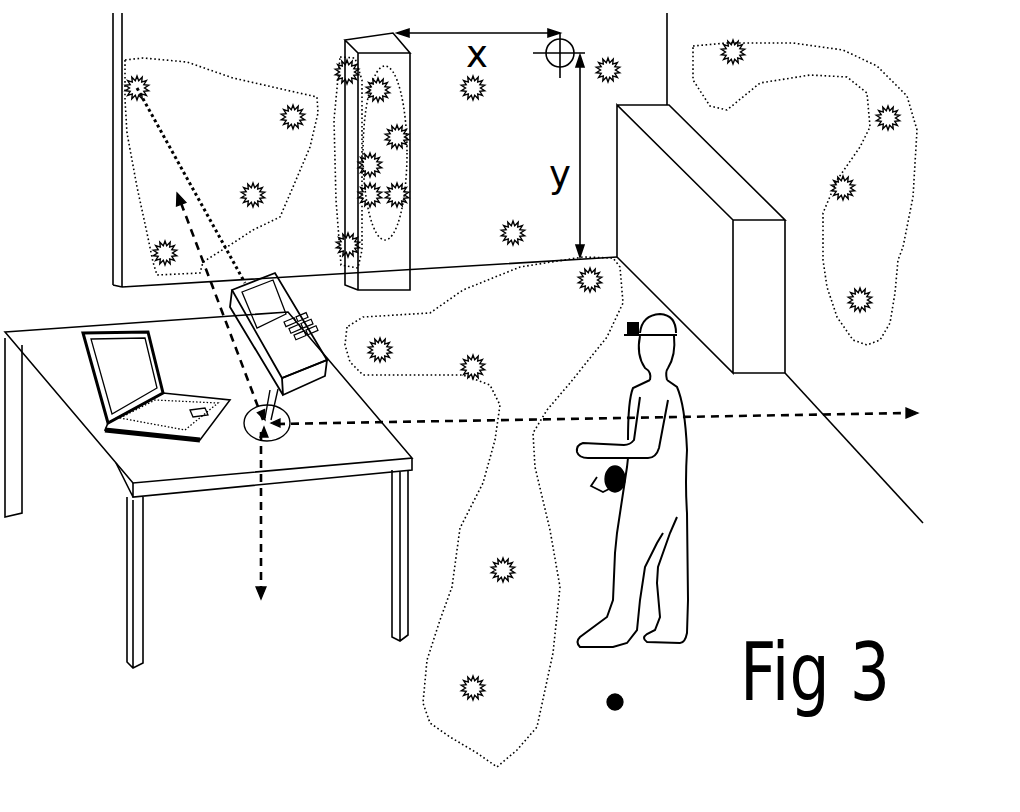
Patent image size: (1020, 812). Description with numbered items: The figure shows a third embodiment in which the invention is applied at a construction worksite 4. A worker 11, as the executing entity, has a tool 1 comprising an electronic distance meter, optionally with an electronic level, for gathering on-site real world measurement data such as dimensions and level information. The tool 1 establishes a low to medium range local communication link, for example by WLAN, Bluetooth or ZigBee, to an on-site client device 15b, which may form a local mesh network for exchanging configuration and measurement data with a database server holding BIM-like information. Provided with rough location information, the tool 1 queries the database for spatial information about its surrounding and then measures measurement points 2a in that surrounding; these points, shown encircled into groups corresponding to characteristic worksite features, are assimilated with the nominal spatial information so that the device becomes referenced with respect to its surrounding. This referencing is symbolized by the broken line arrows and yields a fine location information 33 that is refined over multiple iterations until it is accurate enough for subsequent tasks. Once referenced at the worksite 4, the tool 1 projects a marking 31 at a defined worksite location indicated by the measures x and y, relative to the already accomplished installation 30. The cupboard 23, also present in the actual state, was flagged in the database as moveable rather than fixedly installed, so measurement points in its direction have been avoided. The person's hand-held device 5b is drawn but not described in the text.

The tool 1 is at (310, 358).
The measurement points 2a is at (133, 84).
The worksite 4 is at (615, 702).
The mobile device carried by person 5b is at (632, 485).
The worker 11 is at (667, 472).
The on-site client device 15b is at (118, 432).
The cupboard 23 is at (693, 160).
The installation 30 is at (343, 50).
The marking 31 is at (566, 46).
The fine location information 33 is at (266, 432).